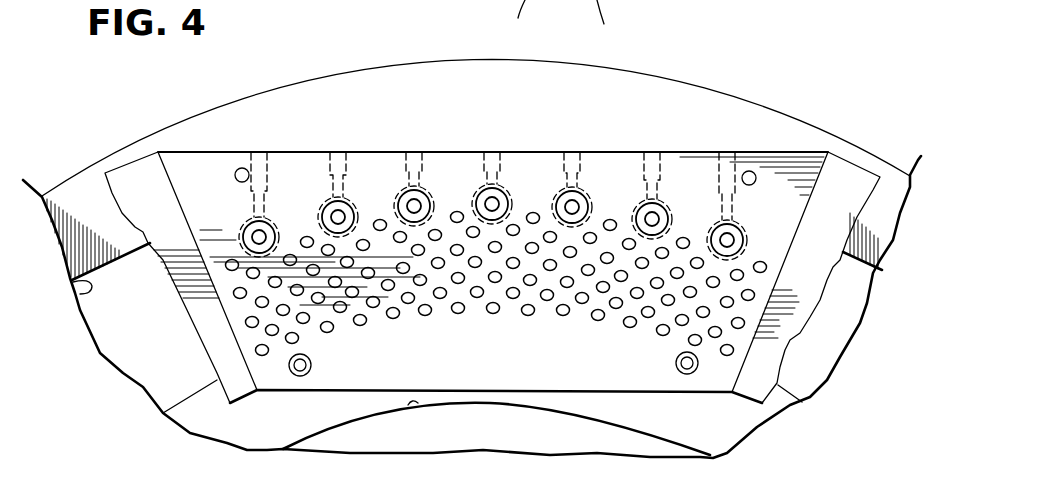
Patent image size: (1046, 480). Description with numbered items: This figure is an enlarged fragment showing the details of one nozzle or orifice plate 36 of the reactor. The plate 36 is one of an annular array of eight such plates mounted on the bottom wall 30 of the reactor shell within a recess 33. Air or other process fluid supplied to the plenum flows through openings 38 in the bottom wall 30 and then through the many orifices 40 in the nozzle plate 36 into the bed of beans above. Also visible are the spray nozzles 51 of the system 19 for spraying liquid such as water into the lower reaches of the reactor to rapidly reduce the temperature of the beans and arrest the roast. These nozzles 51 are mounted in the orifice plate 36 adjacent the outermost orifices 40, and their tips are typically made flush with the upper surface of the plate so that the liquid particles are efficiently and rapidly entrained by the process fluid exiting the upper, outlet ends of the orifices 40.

The bottom wall 30 is at (407, 60).
The system for spraying liquid 19 is at (488, 143).
The nozzle or orifice plate 36 is at (543, 152).
The spray nozzle 51 is at (475, 201).
The orifice 40 is at (625, 323).
The opening 38 is at (72, 290).
The recess 33 is at (415, 403).